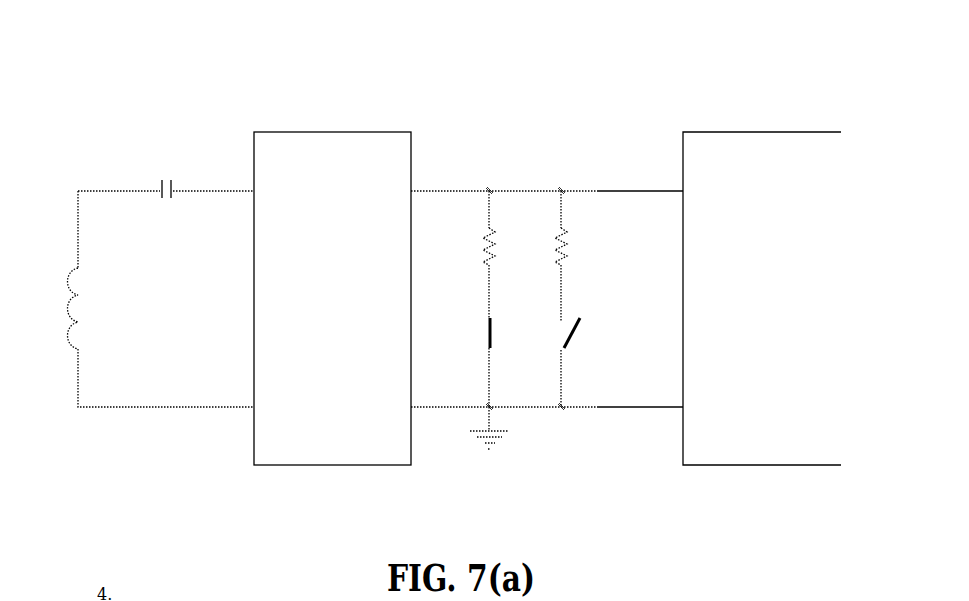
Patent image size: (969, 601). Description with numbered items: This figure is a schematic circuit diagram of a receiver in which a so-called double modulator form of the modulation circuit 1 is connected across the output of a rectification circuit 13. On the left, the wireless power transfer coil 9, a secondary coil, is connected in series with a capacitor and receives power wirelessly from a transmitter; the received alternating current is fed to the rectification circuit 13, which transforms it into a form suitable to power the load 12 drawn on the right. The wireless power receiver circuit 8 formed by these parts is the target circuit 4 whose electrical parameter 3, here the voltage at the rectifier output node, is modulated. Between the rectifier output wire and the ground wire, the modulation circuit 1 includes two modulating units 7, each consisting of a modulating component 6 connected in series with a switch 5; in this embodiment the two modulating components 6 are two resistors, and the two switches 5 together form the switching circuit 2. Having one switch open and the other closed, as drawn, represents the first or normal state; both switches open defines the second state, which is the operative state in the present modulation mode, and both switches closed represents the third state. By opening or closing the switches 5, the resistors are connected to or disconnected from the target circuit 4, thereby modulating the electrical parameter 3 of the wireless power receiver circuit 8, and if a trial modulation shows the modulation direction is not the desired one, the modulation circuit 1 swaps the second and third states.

The modulation circuit 1 is at (562, 148).
The switching circuit 2 is at (533, 390).
The electrical parameter 3 is at (488, 160).
The target circuit 4 is at (172, 44).
The switch 5 is at (495, 333).
The modulating component 6 is at (494, 258).
The modulating unit 7 is at (474, 290).
The wireless power receiver circuit 8 is at (140, 90).
The wireless power transfer coil 9 is at (68, 300).
The load 12 is at (782, 132).
The rectification circuit 13 is at (326, 132).